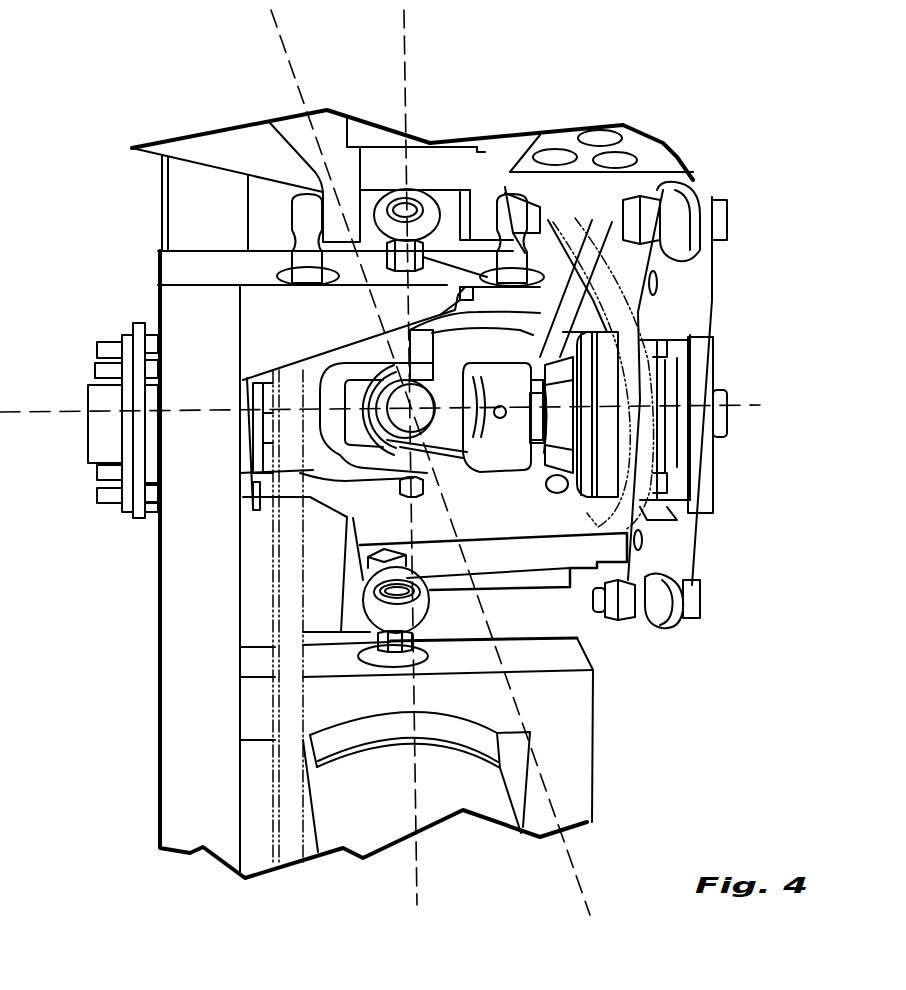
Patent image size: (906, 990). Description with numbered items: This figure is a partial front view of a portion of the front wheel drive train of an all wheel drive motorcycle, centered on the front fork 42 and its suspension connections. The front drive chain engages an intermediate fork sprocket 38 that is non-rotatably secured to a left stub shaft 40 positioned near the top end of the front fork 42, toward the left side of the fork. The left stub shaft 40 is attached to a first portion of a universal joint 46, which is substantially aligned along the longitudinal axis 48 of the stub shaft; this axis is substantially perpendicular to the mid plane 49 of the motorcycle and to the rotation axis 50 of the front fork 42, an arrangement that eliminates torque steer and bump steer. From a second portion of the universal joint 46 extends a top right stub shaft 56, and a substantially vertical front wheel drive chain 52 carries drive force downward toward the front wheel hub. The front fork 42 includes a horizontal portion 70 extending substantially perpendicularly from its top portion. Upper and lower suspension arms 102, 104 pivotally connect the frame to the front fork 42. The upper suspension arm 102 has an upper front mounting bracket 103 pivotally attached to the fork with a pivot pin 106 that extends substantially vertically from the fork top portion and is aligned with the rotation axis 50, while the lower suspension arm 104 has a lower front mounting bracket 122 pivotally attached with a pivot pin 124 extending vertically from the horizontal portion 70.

The intermediate fork sprocket 38 is at (613, 355).
The left stub shaft 40 is at (543, 420).
The front fork 42 is at (152, 710).
The universal joint 46 is at (452, 425).
The longitudinal axis 48 is at (68, 413).
The mid plane 49 is at (272, 14).
The rotation axis 50 is at (406, 22).
The front wheel drive chain 52 is at (290, 583).
The top right stub shaft 56 is at (272, 422).
The horizontal portion 70 is at (523, 702).
The upper suspension arm 102 is at (641, 125).
The upper front mounting bracket 103 is at (415, 190).
The lower suspension arm 104 is at (617, 563).
The pivot pin 106 is at (360, 147).
The lower front mounting bracket 122 is at (427, 615).
The pivot pin 124 is at (413, 655).